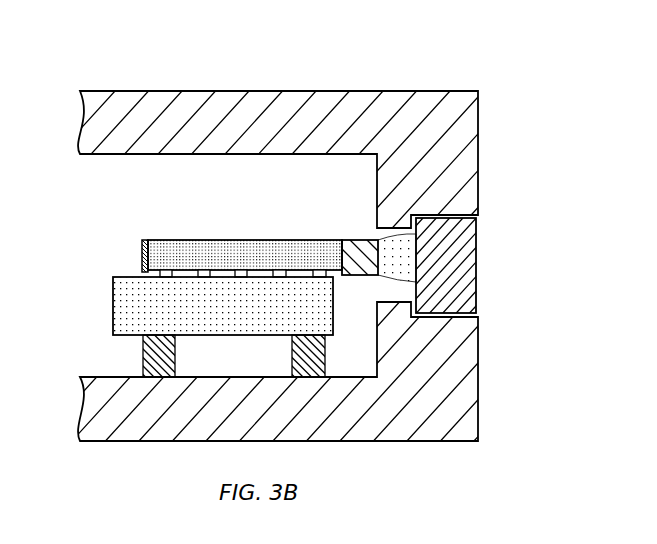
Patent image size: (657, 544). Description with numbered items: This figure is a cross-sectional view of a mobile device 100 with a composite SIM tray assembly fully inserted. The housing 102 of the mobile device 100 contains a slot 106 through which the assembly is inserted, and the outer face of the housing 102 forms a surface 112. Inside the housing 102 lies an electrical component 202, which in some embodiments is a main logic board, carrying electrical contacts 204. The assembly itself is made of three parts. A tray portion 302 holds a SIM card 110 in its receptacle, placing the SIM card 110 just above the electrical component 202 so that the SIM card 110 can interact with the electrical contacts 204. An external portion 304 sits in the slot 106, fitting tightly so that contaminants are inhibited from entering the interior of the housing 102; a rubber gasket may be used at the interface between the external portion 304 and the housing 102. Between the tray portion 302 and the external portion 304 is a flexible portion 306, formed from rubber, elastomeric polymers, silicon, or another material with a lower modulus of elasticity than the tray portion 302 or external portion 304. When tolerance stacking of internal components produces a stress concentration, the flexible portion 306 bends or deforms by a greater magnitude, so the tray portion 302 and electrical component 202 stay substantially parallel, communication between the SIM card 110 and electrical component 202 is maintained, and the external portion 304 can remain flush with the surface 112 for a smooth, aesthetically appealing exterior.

The mobile device 100 is at (568, 71).
The housing 102 is at (478, 381).
The slot 106 is at (518, 230).
The SIM card 110 is at (232, 240).
The surface 112 is at (495, 160).
The electrical component 202 is at (113, 315).
The electrical contacts 204 is at (143, 275).
The tray portion 302 is at (141, 240).
The external portion 304 is at (478, 268).
The flexible portion 306 is at (387, 276).